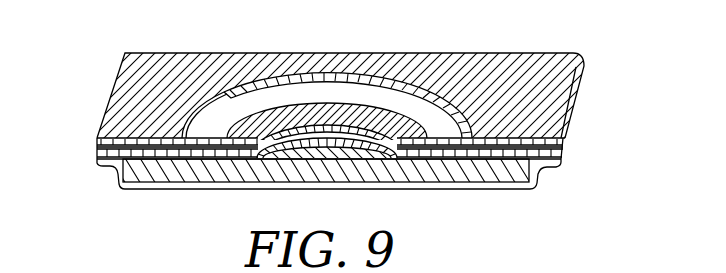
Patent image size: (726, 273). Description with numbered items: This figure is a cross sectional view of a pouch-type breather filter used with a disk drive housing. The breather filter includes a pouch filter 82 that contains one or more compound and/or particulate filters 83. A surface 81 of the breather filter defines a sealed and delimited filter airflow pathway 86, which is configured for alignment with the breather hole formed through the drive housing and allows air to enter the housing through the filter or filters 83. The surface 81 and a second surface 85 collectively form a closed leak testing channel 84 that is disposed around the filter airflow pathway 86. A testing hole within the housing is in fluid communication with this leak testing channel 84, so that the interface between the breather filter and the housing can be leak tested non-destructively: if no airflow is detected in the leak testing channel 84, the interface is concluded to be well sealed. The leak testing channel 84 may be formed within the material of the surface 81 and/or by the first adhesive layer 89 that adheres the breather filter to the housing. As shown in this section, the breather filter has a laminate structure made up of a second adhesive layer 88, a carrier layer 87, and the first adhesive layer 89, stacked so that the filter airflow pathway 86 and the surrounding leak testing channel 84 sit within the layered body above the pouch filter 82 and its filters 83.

The surface 81 is at (567, 53).
The pouch filter 82 is at (550, 167).
The compound and/or particulate filter 83 is at (499, 182).
The leak testing channel 84 is at (412, 110).
The surface 85 is at (249, 122).
The filter airflow pathway 86 is at (322, 148).
The carrier layer 87 is at (96, 153).
The second adhesive layer 88 is at (96, 159).
The first adhesive layer 89 is at (97, 143).